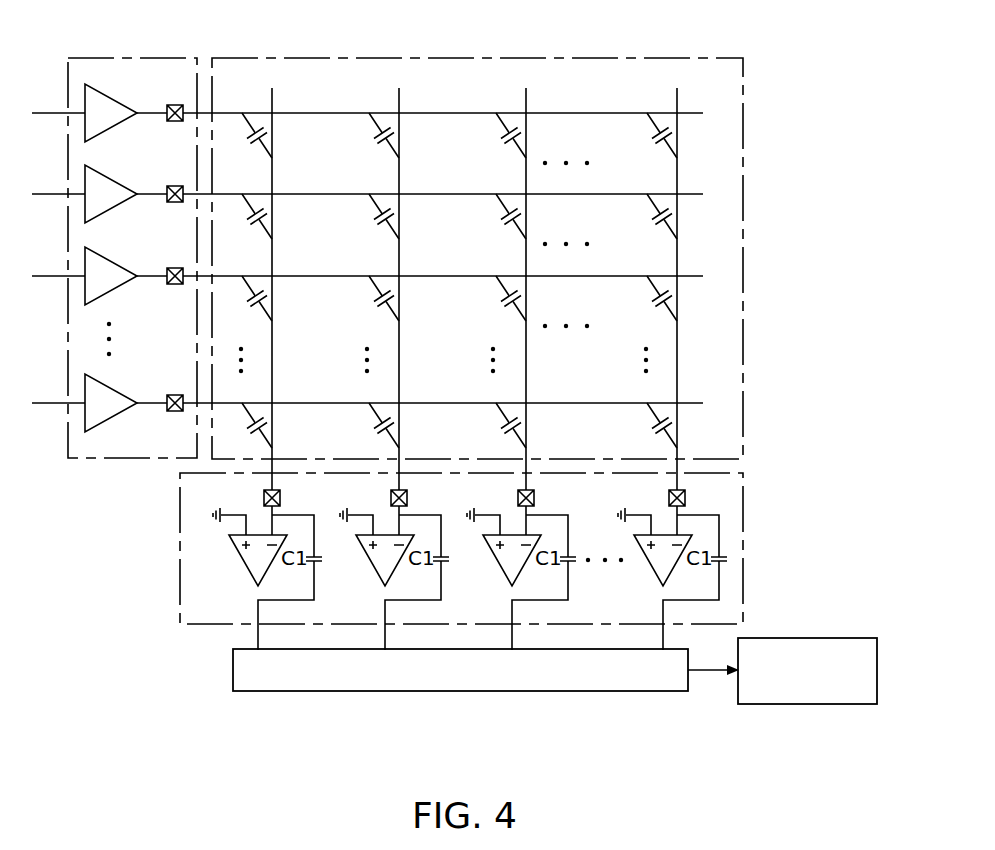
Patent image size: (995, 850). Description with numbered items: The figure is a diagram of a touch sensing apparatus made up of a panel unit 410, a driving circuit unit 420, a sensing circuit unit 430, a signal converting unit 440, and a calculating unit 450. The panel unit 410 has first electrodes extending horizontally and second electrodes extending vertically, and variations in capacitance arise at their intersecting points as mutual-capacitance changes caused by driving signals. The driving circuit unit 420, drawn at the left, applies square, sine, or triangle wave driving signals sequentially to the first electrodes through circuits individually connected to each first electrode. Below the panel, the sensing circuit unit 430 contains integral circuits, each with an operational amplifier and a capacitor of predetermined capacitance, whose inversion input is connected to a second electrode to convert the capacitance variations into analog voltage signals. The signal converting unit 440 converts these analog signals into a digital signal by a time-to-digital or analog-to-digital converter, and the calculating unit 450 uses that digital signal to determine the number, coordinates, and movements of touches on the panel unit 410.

The panel unit 410 is at (495, 58).
The driving circuit unit 420 is at (132, 58).
The sensing circuit unit 430 is at (180, 548).
The signal converting unit 440 is at (460, 694).
The calculating unit 450 is at (783, 706).